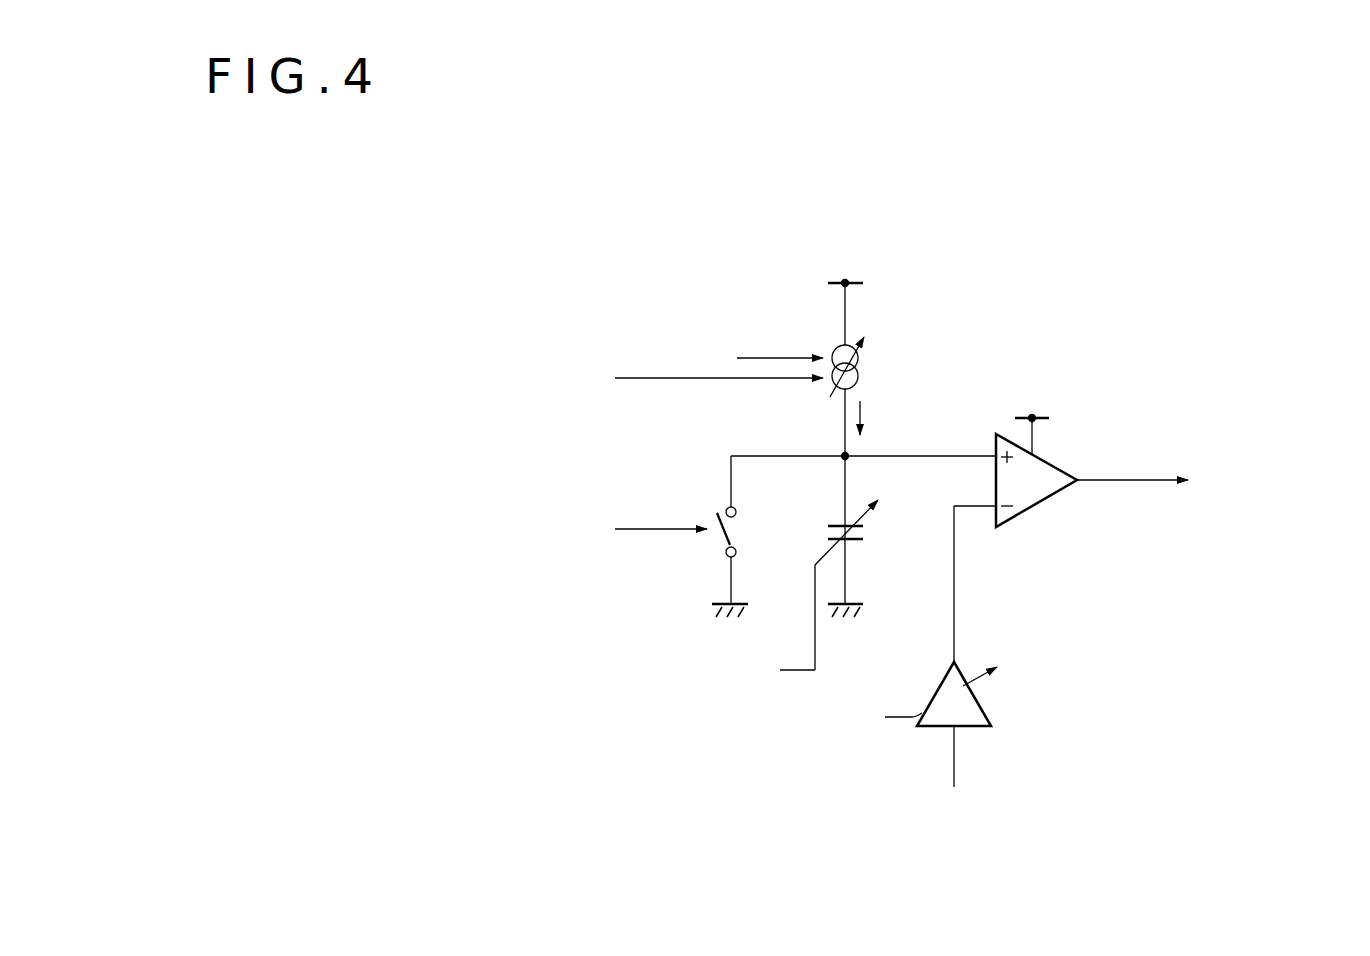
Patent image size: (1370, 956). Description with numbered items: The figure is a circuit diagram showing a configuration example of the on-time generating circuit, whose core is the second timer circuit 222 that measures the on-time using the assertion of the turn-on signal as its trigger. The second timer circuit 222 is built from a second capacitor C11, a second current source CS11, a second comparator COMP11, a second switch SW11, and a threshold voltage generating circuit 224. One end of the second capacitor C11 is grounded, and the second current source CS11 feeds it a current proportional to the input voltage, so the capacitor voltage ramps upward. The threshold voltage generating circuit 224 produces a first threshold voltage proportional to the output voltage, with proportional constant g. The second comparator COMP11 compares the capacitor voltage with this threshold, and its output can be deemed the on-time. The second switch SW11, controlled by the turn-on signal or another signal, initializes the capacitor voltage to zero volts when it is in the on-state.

The second timer circuit 222 is at (894, 522).
The second current source CS11 is at (858, 362).
The second switch SW11 is at (775, 505).
The second capacitor C11 is at (847, 585).
The second comparator COMP11 is at (1036, 505).
The threshold voltage generating circuit 224 is at (983, 708).